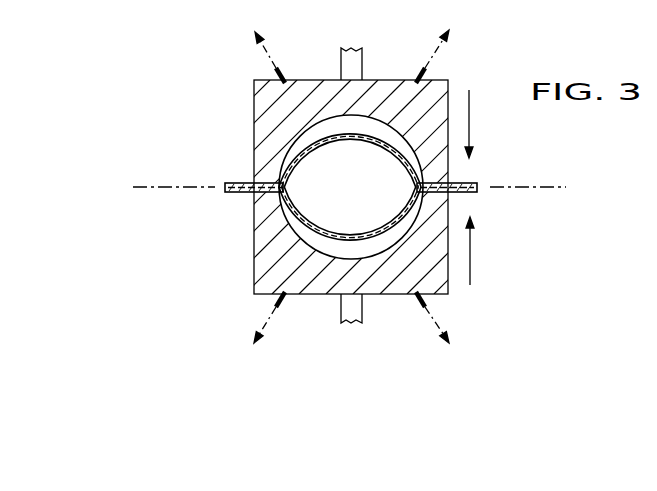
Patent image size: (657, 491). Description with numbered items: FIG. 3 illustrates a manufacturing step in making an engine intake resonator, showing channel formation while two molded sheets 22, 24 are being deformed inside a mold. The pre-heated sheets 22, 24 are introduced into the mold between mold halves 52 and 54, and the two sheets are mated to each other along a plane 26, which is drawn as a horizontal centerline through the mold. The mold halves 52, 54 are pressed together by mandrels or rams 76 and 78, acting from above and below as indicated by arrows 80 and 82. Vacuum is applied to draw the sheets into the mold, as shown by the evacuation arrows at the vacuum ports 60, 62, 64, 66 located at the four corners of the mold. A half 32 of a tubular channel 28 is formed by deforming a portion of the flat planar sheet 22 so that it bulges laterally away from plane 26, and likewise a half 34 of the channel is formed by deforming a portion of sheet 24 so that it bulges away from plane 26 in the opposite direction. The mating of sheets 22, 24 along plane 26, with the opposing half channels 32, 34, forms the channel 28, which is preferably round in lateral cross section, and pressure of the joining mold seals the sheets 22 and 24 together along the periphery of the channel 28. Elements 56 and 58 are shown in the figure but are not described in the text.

The molded sheet 22 is at (239, 183).
The molded sheet 24 is at (239, 192).
The plane 26 is at (176, 186).
The tubular channel 28 is at (350, 187).
The half channel 32 is at (418, 172).
The half channel 34 is at (418, 208).
The mold half 52 is at (252, 92).
The mold half 54 is at (256, 270).
The upper mold cavity 56 is at (361, 126).
The lower mold cavity 58 is at (338, 250).
The vacuum port 60 is at (283, 78).
The vacuum port 62 is at (428, 72).
The vacuum port 64 is at (281, 300).
The vacuum port 66 is at (418, 298).
The mandrel or ram 76 is at (341, 62).
The mandrel or ram 78 is at (362, 310).
The arrow 80 is at (475, 119).
The arrow 82 is at (475, 251).